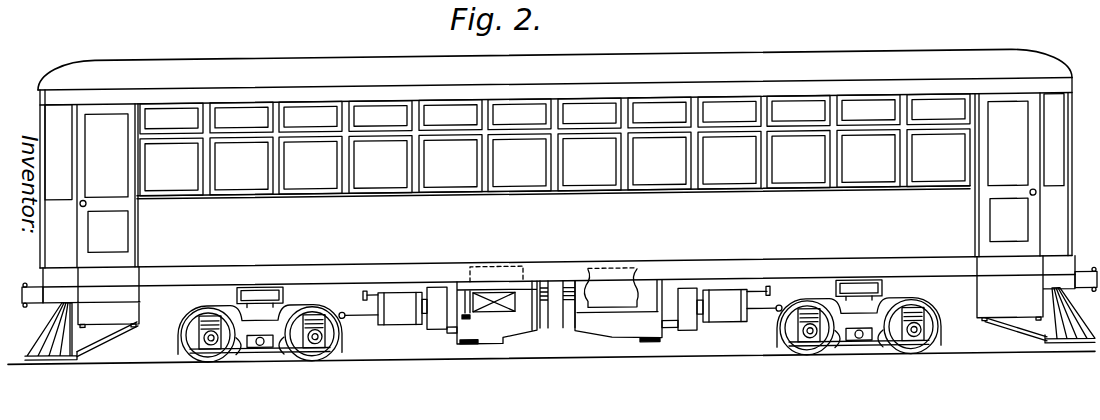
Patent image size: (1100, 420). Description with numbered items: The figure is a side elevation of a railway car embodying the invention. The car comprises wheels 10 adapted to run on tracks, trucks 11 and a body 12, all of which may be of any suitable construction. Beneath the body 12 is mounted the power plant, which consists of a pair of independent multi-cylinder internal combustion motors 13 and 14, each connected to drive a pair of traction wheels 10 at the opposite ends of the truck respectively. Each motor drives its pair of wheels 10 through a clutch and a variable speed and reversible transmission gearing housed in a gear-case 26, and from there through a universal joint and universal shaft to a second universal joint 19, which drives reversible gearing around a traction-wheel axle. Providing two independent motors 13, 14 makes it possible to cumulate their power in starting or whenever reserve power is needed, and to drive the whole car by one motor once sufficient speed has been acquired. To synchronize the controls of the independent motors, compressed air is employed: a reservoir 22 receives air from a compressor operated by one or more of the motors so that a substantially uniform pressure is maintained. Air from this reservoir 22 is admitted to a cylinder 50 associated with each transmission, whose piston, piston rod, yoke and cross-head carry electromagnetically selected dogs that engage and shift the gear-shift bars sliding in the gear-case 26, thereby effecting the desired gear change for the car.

The wheels 10 is at (231, 364).
The trucks 11 is at (269, 332).
The body 12 is at (556, 168).
The internal combustion motor 13 is at (508, 334).
The internal combustion motor 14 is at (630, 335).
The second universal joint 19 is at (344, 322).
The reservoir 22 is at (620, 300).
The gear-case 26 is at (438, 329).
The cylinder 50 is at (366, 296).